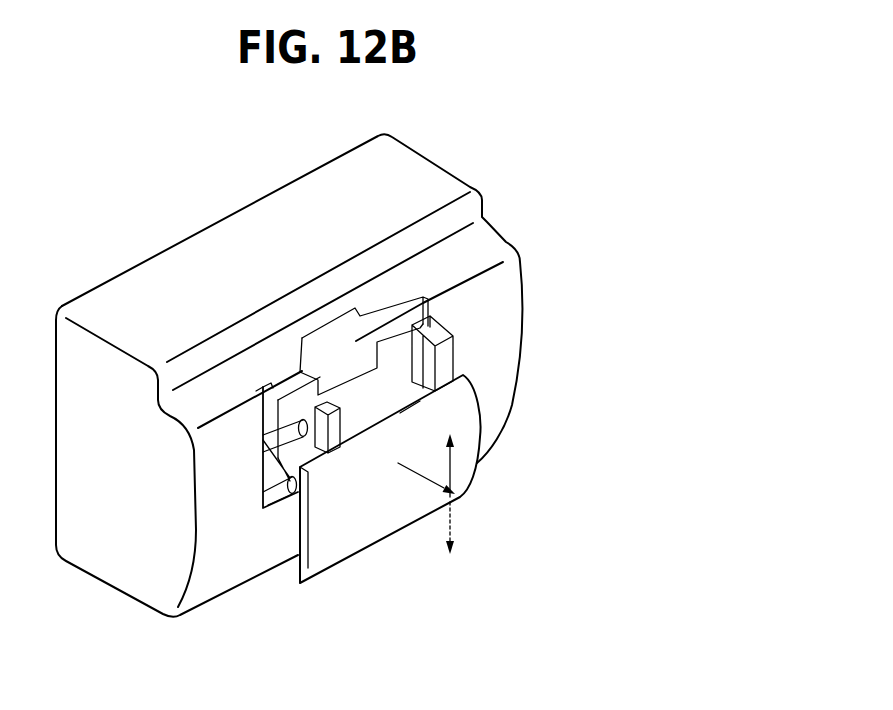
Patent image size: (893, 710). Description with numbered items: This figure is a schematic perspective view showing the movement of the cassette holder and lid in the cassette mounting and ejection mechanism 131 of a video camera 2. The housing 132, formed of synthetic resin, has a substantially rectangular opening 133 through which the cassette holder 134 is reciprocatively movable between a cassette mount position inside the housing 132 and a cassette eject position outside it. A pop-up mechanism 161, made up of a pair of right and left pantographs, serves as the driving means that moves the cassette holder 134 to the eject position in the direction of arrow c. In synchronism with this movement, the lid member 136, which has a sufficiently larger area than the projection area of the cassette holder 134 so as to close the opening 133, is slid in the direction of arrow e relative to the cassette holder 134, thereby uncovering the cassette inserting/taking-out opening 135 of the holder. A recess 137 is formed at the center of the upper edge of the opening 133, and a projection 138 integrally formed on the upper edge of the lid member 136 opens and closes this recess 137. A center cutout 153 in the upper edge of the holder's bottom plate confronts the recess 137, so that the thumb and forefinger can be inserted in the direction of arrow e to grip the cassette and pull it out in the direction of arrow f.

The video camera 2 is at (209, 212).
The cassette mounting and ejection mechanism 131 is at (500, 283).
The housing 132 is at (498, 365).
The opening 133 is at (267, 388).
The cassette holder 134 is at (440, 337).
The cassette inserting/taking-out opening 135 is at (392, 353).
The lid member 136 is at (385, 515).
The recess 137 is at (332, 319).
The projection 138 is at (400, 413).
The center cutout 153 is at (352, 378).
The pop-up mechanism 161 is at (259, 468).
The arrow f is at (452, 460).
The arrow e is at (453, 523).
The arrow c is at (428, 477).